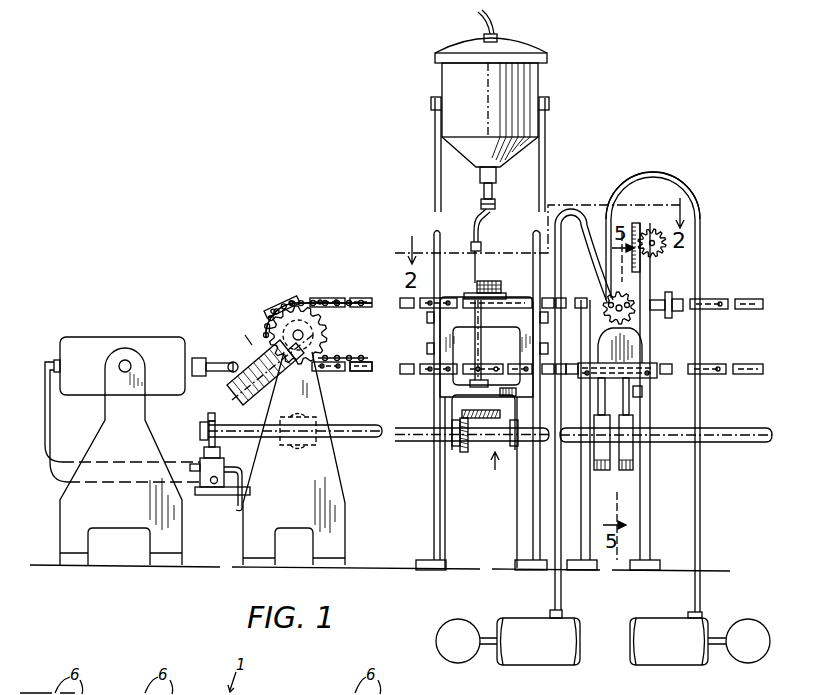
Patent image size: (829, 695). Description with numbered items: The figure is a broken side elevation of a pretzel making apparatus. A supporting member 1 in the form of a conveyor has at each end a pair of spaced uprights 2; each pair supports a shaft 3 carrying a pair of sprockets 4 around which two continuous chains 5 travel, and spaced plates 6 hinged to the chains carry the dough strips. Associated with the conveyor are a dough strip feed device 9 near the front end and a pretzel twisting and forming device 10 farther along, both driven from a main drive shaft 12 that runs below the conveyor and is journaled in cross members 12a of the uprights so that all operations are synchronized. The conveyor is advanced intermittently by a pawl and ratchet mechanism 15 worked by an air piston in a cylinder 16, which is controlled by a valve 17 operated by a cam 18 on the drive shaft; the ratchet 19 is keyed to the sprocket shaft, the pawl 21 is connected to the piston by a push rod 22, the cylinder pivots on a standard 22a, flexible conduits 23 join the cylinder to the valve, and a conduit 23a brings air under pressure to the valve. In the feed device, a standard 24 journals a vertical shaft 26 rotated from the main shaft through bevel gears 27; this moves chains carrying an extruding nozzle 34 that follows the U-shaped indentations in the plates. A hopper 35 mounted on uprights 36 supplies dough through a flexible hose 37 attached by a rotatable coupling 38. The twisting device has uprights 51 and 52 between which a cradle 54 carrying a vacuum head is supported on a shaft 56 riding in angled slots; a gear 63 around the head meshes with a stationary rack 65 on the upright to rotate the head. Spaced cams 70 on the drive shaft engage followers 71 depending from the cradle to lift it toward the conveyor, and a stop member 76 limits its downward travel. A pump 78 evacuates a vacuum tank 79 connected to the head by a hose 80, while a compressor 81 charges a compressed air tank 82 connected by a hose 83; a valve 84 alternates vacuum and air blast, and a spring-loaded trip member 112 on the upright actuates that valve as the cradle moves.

The supporting member 1 is at (359, 282).
The uprights or standards 2 is at (342, 484).
The shaft 3 is at (300, 345).
The sprockets 4 is at (320, 326).
The continuous chains 5 is at (347, 357).
The supporting plates 6 is at (282, 308).
The dough strip feed device 9 is at (494, 471).
The pretzel twisting and forming device 10 is at (628, 174).
The main drive shaft 12 is at (243, 438).
The cross members 12a is at (292, 446).
The pawl and ratchet mechanism 15 is at (250, 339).
The cylinder 16 is at (132, 322).
The valve 17 is at (217, 495).
The cam 18 is at (211, 405).
The ratchet 19 is at (291, 297).
The pawl 21 is at (258, 346).
The connecting or push rod 22 is at (206, 358).
The standard 22a is at (68, 525).
The flexible conduits 23 is at (118, 466).
The conduit 23a is at (246, 489).
The upright or standard 24 is at (436, 512).
The shaft 26 is at (486, 336).
The bevel gears 27 is at (480, 426).
The dough discharge or extruding nozzle 34 is at (474, 273).
The container or hopper 35 is at (542, 72).
The uprights 36 is at (435, 150).
The flexible conduit or hose 37 is at (481, 238).
The rotatable coupling 38 is at (497, 206).
The upright 51 is at (646, 509).
The upright 52 is at (584, 489).
The carrier or cradle 54 is at (630, 341).
The shaft 56 is at (580, 365).
The gear 63 is at (641, 293).
The gear rack 65 is at (636, 224).
The cams 70 is at (601, 454).
The cam followers 71 is at (598, 398).
The stop member 76 is at (644, 392).
The pump 78 is at (748, 661).
The vacuum tank 79 is at (673, 660).
The flexible conduit or hose 80 is at (664, 172).
The pump or compressor 81 is at (444, 640).
The compressed air tank 82 is at (517, 630).
The flexible conduit or hose 83 is at (577, 222).
The valve 84 is at (636, 317).
The trip or abutment member 112 is at (694, 299).